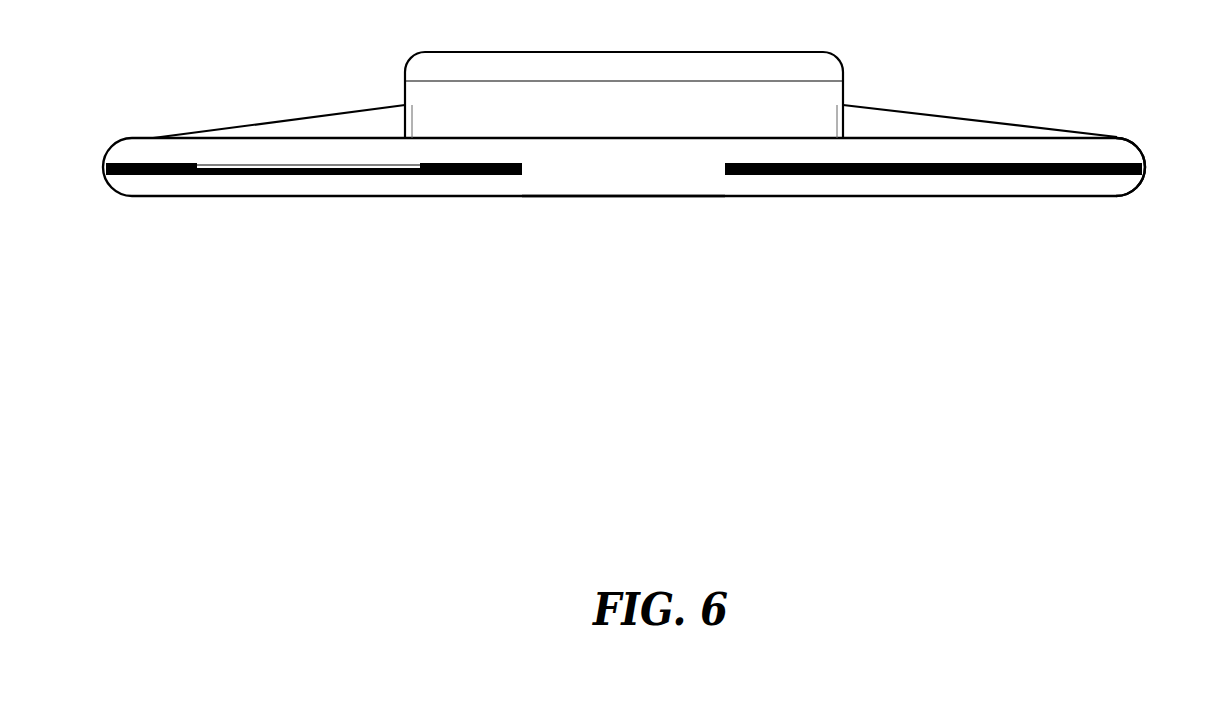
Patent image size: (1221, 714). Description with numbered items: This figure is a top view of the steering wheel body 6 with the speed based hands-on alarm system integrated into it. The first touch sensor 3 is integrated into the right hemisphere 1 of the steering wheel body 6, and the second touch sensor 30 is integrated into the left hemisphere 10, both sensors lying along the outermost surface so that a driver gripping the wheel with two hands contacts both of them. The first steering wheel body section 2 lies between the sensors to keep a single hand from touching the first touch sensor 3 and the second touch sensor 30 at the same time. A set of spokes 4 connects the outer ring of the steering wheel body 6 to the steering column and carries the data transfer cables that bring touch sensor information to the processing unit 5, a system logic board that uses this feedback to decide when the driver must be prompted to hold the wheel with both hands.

The right hemisphere 1 is at (1116, 190).
The first steering wheel body section 2 is at (621, 176).
The first touch sensor 3 is at (889, 178).
The second touch sensor 30 is at (355, 178).
The set of spokes 4 is at (357, 118).
The processing unit 5 is at (623, 84).
The steering wheel body 6 is at (654, 220).
The left hemisphere 10 is at (654, 140).